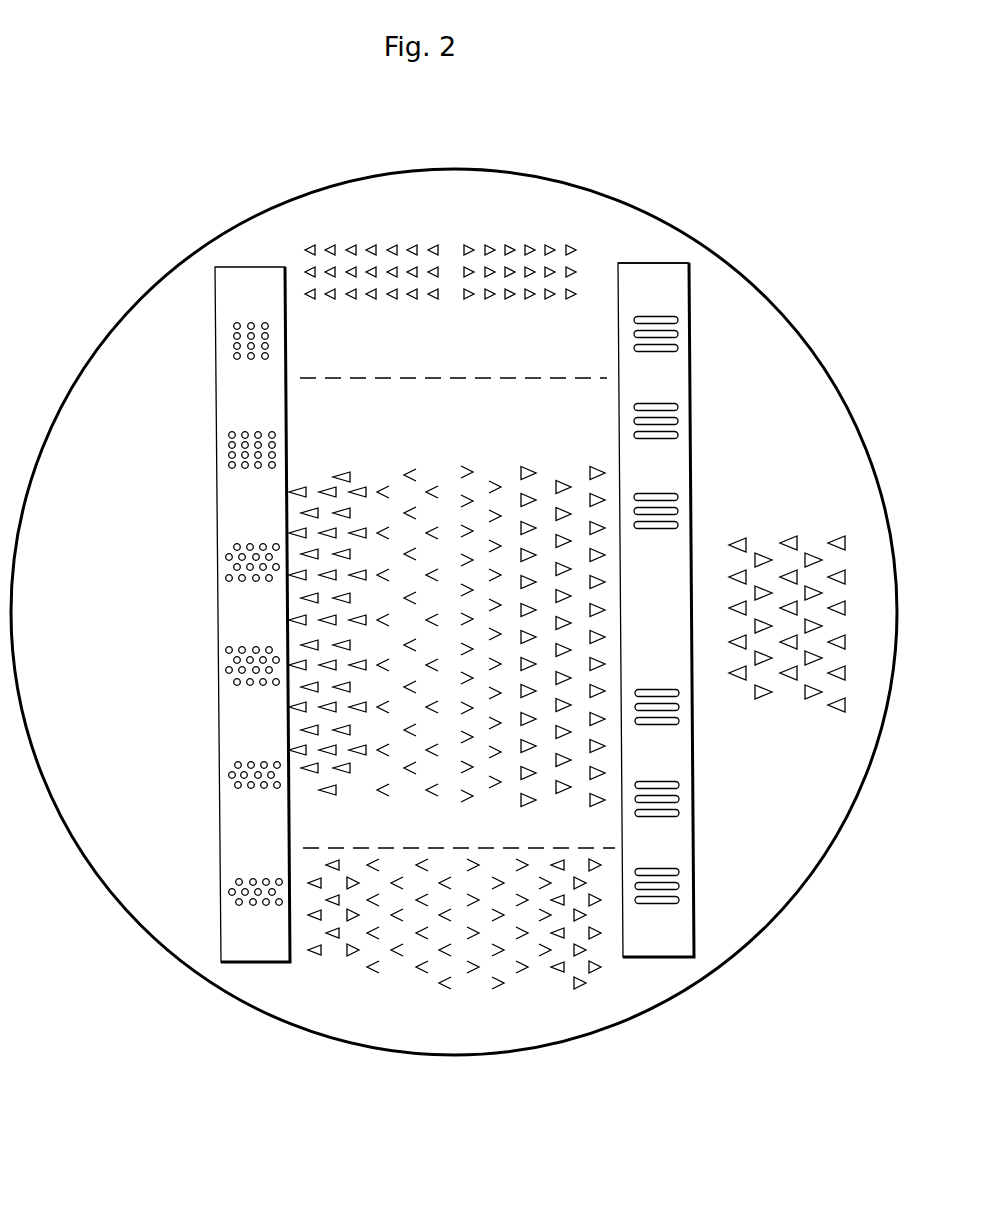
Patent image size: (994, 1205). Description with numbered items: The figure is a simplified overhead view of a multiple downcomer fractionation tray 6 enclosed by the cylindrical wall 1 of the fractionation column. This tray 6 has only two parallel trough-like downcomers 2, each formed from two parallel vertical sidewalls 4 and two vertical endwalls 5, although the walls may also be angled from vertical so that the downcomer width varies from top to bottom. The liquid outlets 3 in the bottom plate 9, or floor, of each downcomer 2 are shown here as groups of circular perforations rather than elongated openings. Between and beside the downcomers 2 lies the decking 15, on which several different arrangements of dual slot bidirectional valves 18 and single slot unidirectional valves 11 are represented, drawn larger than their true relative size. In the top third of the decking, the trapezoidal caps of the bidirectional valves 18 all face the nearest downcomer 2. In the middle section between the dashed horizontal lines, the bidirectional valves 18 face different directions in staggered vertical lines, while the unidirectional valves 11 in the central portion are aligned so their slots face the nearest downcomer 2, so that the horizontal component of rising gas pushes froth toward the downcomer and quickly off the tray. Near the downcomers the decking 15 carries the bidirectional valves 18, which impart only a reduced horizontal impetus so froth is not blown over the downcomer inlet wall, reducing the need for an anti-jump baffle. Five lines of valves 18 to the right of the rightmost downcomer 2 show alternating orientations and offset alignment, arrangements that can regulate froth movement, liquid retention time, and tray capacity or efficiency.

The cylindrical wall 1 is at (655, 205).
The downcomer 2 is at (457, 589).
The liquid outlet 3 is at (236, 356).
The sidewall 4 is at (670, 587).
The endwall 5 is at (624, 262).
The fractionation tray 6 is at (776, 847).
The bottom plate 9 is at (245, 612).
The unidirectional valve 11 is at (470, 468).
The decking 15 is at (105, 693).
The bidirectional valve 18 is at (509, 246).